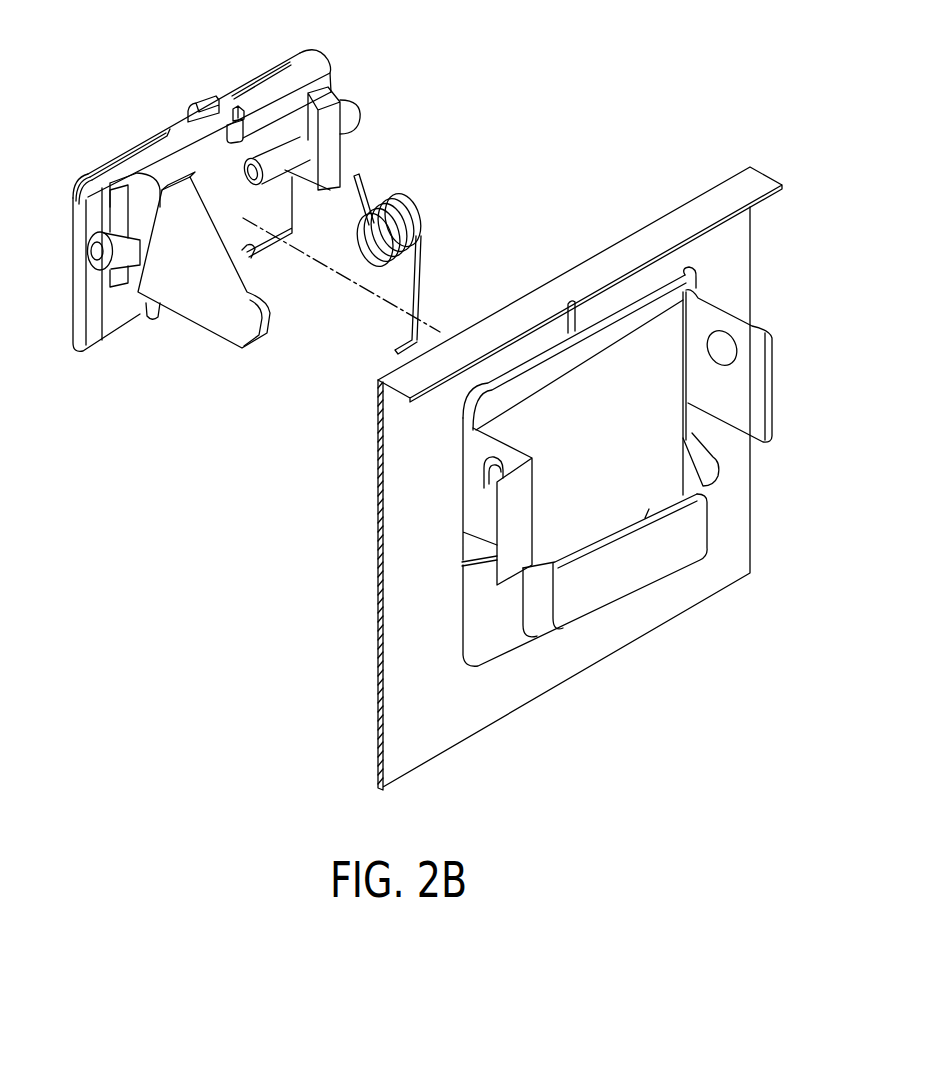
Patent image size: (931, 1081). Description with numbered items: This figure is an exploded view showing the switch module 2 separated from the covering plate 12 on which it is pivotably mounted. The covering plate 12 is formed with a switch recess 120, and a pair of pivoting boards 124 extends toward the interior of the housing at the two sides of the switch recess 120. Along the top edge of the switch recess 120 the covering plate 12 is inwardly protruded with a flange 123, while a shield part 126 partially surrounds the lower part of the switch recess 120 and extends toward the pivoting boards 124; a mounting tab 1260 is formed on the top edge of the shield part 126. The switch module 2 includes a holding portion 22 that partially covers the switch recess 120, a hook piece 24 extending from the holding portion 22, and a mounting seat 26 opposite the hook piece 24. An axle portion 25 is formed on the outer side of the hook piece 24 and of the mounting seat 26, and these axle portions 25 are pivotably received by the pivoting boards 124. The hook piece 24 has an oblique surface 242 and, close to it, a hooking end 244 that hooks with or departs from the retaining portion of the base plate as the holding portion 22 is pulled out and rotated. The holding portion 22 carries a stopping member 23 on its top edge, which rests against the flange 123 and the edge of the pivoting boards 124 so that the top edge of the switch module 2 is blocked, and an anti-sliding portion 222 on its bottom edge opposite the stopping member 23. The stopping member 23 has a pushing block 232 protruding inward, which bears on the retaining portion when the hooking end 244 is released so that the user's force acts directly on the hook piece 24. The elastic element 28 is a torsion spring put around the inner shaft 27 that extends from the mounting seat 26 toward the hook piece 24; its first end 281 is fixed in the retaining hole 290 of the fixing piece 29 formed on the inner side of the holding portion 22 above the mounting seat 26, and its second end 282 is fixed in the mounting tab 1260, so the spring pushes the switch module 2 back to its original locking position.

The switch module 2 is at (220, 208).
The holding portion 22 is at (115, 310).
The anti-sliding portion 222 is at (160, 313).
The stopping member 23 is at (148, 163).
The pushing block 232 is at (207, 108).
The hook piece 24 is at (207, 312).
The oblique surface 242 is at (253, 277).
The hooking end 244 is at (135, 185).
The axle portion 25 is at (95, 258).
The mounting seat 26 is at (327, 155).
The inner shaft 27 is at (285, 163).
The elastic element 28 is at (405, 258).
The first end 281 is at (363, 185).
The second end 282 is at (390, 342).
The fixing piece 29 is at (277, 97).
The retaining hole 290 is at (238, 110).
The covering plate 12 is at (701, 184).
The switch recess 120 is at (604, 473).
The flange 123 is at (543, 357).
The pivoting board 124 is at (477, 505).
The shield part 126 is at (591, 563).
The mounting tab 1260 is at (687, 489).